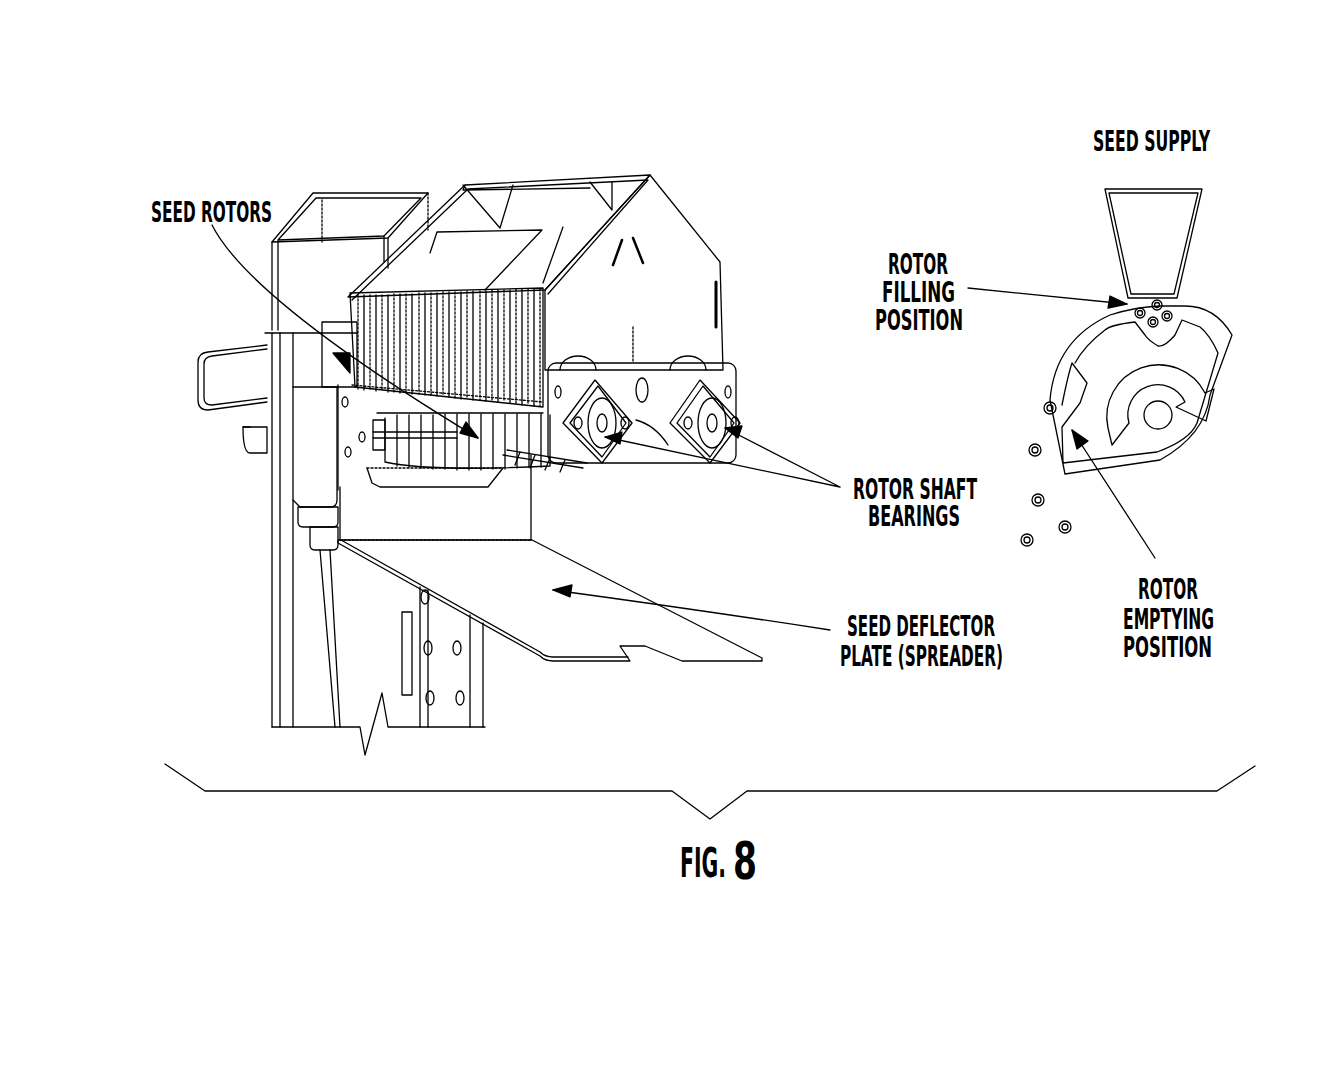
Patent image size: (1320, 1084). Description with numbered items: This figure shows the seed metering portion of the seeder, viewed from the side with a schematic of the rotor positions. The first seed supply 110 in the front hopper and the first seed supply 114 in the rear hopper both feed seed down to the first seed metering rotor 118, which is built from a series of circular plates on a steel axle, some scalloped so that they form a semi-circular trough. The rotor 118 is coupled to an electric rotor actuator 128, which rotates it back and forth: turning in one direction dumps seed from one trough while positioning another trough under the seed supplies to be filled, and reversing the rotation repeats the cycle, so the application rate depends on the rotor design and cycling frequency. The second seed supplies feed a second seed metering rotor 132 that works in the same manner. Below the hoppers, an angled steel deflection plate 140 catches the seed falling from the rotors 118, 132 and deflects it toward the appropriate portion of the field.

The first seed supply 110 is at (465, 263).
The first seed supply 114 is at (573, 247).
The first seed metering rotor 118 is at (590, 472).
The electric rotor actuator 128 is at (188, 383).
The second seed metering rotor 132 is at (740, 395).
The deflection plate 140 is at (645, 582).